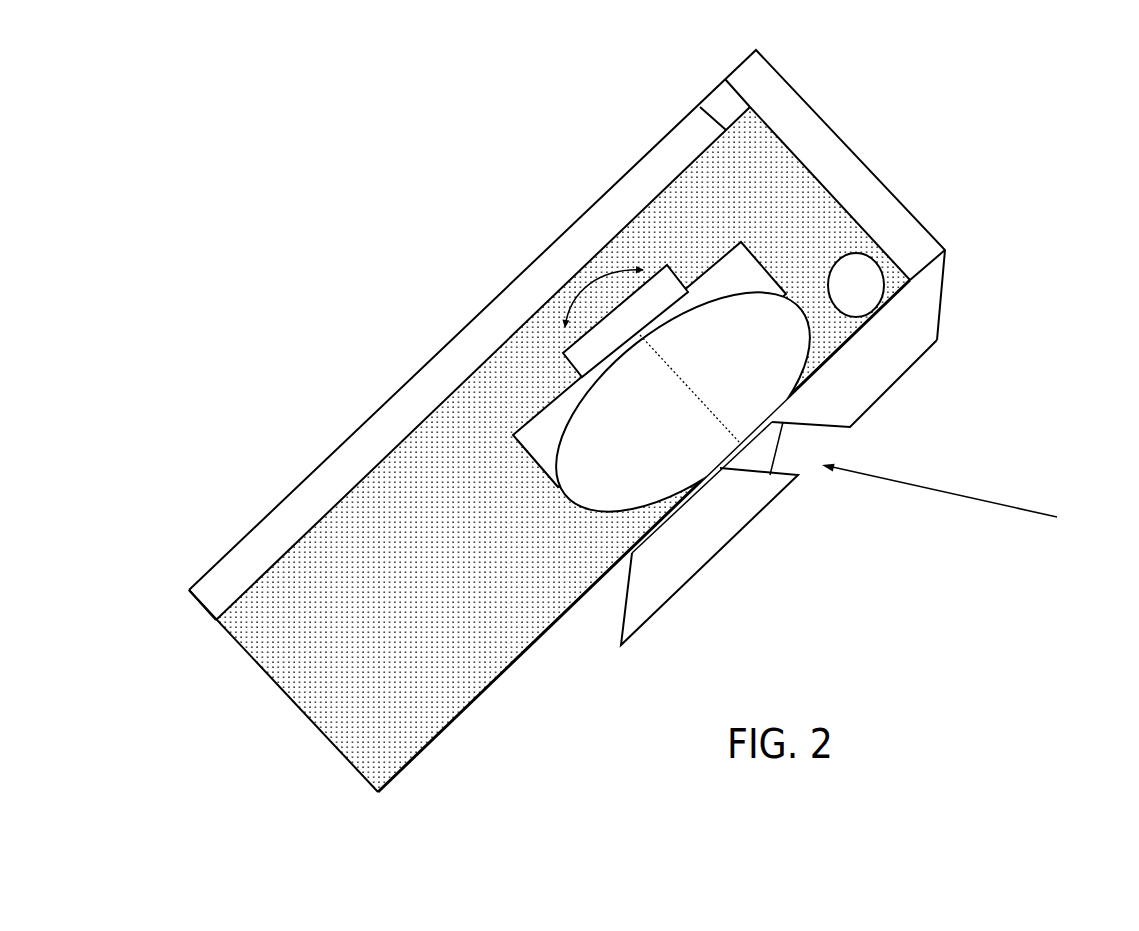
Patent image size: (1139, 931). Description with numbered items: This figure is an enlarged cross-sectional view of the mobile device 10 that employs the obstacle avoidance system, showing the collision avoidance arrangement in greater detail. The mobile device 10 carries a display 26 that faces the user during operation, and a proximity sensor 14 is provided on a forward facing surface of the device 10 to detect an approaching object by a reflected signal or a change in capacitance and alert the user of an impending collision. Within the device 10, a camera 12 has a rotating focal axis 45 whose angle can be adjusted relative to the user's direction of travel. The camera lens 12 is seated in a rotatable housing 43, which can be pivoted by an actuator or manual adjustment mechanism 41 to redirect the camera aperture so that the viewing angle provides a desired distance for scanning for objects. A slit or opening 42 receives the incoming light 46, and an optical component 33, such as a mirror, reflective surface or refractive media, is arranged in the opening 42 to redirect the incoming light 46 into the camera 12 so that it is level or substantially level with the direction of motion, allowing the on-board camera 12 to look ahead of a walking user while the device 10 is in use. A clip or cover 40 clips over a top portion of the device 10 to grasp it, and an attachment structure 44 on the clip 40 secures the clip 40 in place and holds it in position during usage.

The mobile device 10 is at (524, 662).
The camera 12 is at (747, 392).
The proximity sensor 14 is at (857, 287).
The display 26 is at (357, 432).
The optical component 33 is at (758, 458).
The clip 40 is at (688, 550).
The adjustment mechanism 41 is at (583, 357).
The opening 42 is at (830, 438).
The rotatable housing 43 is at (557, 417).
The attachment structure 44 is at (720, 102).
The rotating focal axis 45 is at (654, 402).
The incoming light 46 is at (990, 503).